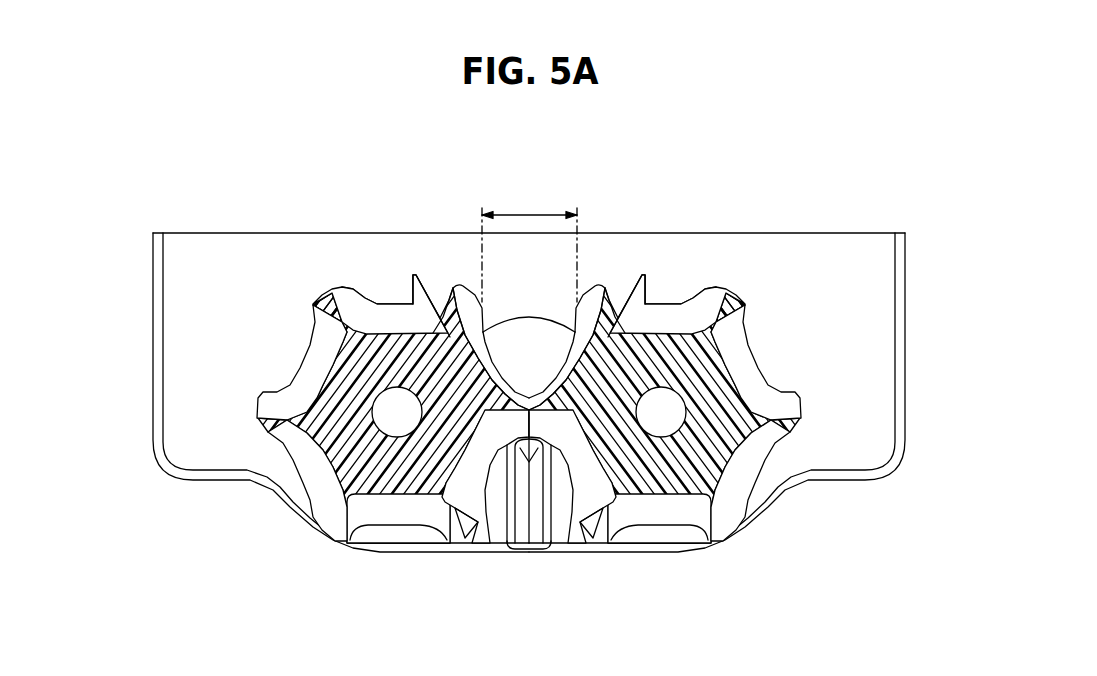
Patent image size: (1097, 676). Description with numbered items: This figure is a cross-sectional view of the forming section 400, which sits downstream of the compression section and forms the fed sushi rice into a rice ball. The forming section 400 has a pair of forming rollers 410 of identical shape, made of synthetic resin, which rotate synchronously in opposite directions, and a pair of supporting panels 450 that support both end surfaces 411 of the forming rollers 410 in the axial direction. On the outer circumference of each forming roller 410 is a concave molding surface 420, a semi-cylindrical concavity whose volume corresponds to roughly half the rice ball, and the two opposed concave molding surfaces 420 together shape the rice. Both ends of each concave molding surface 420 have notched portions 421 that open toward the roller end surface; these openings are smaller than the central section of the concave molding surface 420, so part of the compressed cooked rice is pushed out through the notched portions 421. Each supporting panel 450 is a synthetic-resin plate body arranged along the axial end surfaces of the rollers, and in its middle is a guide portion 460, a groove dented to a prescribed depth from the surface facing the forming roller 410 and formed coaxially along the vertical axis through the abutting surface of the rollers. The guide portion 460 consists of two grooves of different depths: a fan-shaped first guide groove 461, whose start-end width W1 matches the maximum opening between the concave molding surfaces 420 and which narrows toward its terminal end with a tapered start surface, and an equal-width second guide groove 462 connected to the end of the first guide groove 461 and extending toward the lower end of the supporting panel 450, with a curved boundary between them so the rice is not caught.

The forming section 400 is at (528, 384).
The forming roller 410 is at (266, 319).
The end surface 411 is at (393, 440).
The concave molding surface 420 is at (376, 292).
The notched portion 421 is at (583, 600).
The supporting panel 450 is at (143, 305).
The guide portion 460 is at (538, 298).
The first guide groove 461 is at (533, 375).
The second guide groove 462 is at (538, 543).